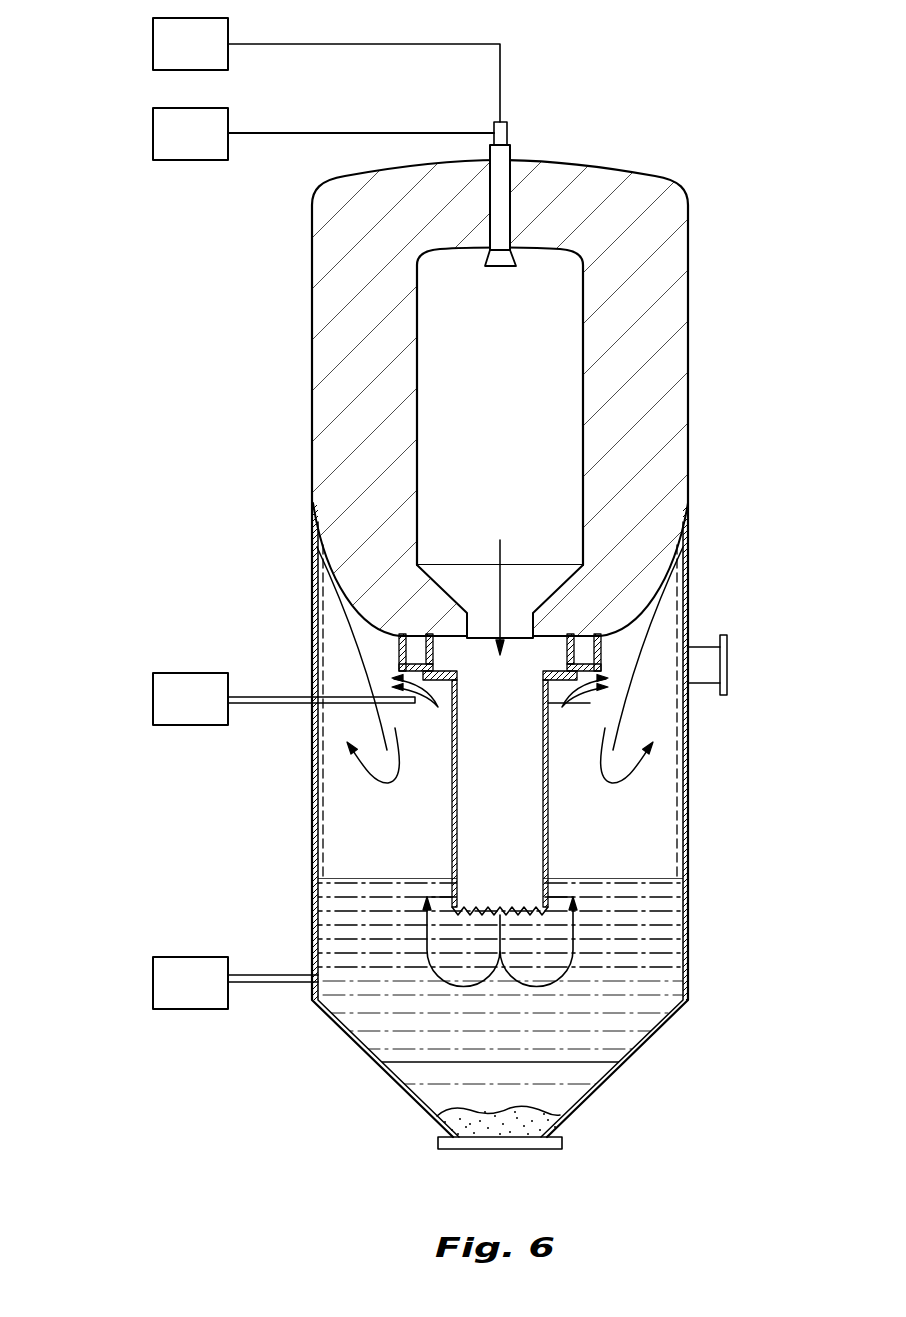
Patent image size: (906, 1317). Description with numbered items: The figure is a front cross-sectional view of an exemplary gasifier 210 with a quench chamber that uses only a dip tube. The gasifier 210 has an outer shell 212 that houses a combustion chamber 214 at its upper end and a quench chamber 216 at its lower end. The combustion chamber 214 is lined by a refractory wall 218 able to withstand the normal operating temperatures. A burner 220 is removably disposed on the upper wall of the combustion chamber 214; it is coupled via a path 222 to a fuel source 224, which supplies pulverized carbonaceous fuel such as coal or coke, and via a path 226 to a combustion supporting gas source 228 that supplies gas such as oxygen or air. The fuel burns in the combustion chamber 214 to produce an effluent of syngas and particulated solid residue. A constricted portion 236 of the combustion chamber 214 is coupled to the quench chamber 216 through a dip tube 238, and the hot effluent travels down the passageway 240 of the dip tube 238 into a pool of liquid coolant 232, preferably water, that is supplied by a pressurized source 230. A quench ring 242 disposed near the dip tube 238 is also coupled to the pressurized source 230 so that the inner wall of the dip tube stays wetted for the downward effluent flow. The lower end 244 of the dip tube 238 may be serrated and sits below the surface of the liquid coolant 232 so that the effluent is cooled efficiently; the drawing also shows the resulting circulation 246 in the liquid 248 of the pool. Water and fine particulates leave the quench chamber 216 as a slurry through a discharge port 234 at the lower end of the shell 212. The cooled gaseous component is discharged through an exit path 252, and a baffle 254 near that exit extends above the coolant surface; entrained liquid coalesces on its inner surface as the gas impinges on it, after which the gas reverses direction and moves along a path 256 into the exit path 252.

The gasifier 210 is at (287, 295).
The outer shell 212 is at (312, 420).
The combustion chamber 214 is at (527, 414).
The quench chamber 216 is at (498, 797).
The refractory wall 218 is at (660, 368).
The burner 220 is at (508, 142).
The path 222 is at (367, 44).
The fuel source 224 is at (153, 42).
The path 226 is at (360, 132).
The combustion supporting gas source 228 is at (153, 132).
The pressurized source 230 is at (153, 720).
The liquid coolant 232 is at (590, 1073).
The discharge port 234 is at (153, 985).
The constricted portion 236 is at (490, 627).
The dip tube 238 is at (452, 842).
The passageway 240 is at (530, 848).
The quench ring 242 is at (399, 655).
The lower end 244 is at (513, 903).
The liquid circulation flow 246 is at (403, 921).
The liquid 248 is at (630, 947).
The exit path 252 is at (727, 643).
The baffle 254 is at (647, 623).
The path 256 is at (653, 722).